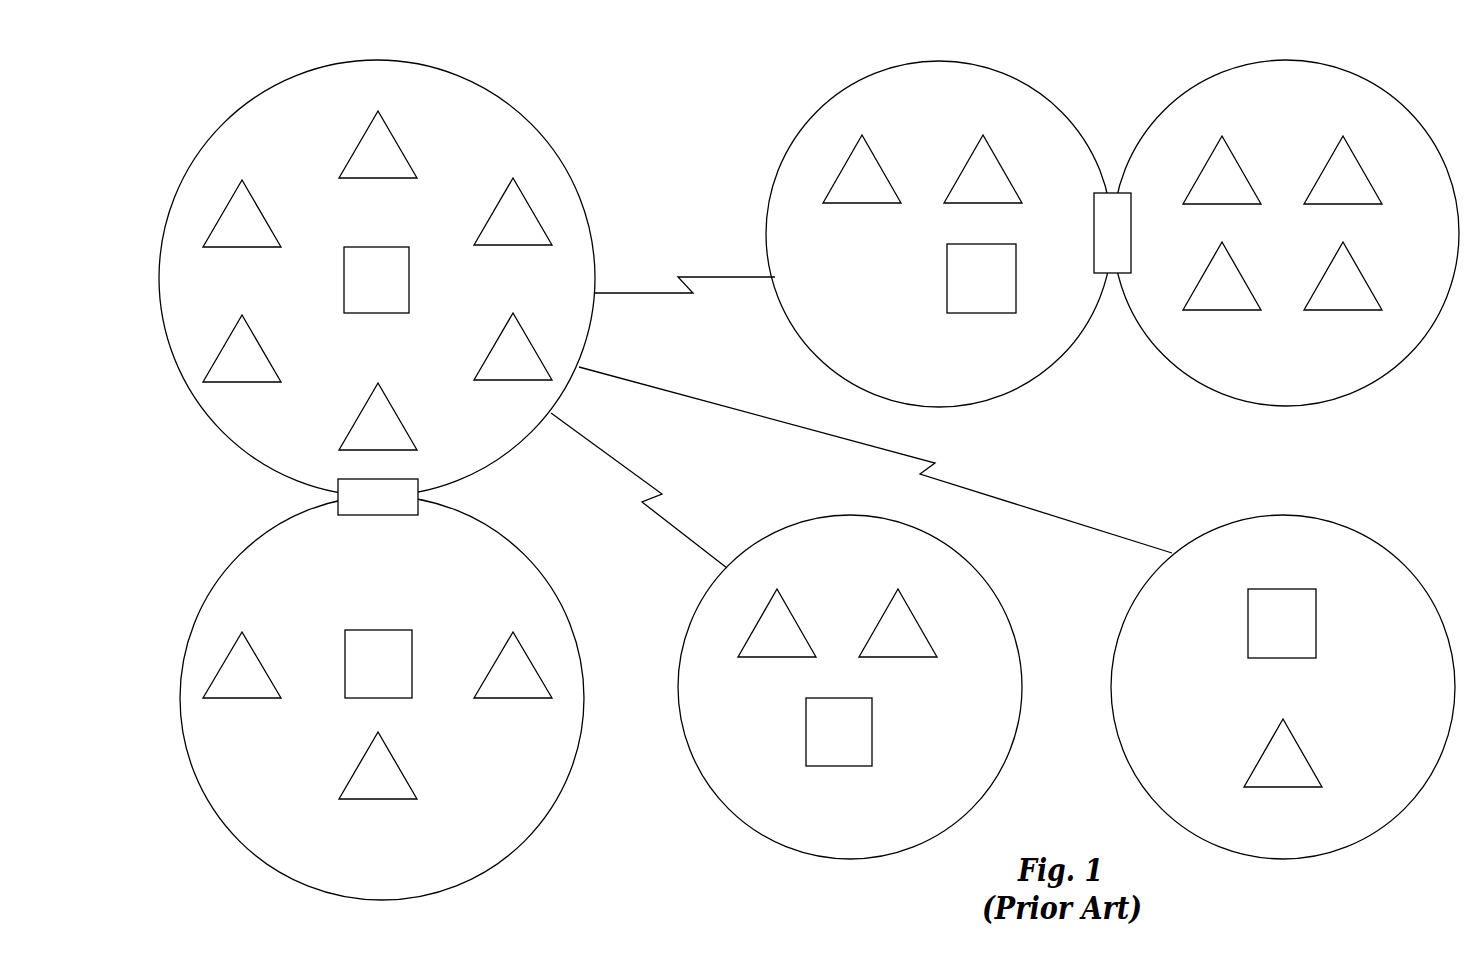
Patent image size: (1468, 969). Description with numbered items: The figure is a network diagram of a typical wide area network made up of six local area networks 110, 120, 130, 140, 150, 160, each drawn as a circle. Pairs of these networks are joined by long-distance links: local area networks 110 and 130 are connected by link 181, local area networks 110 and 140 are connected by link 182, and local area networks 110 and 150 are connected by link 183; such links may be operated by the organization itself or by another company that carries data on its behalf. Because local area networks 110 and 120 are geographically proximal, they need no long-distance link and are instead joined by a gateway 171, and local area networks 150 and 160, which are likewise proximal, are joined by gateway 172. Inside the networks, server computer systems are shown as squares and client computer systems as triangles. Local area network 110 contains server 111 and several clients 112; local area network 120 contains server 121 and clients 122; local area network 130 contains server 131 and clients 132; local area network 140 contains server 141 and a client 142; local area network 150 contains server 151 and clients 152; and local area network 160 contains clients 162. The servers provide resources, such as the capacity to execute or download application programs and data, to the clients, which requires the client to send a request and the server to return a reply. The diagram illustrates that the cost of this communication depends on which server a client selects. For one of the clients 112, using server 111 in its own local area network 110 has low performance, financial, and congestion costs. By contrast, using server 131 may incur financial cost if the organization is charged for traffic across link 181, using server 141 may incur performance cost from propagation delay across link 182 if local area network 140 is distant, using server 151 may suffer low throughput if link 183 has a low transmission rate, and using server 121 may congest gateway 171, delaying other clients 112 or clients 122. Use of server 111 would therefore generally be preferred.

The local area network 110 is at (408, 278).
The server 111 is at (402, 266).
The clients 112 is at (377, 275).
The local area network 120 is at (406, 698).
The server 121 is at (402, 650).
The clients 122 is at (384, 710).
The local area network 130 is at (891, 687).
The server 131 is at (859, 745).
The clients 132 is at (853, 631).
The local area network 140 is at (1283, 709).
The server 141 is at (1319, 622).
The client 142 is at (1306, 747).
The local area network 150 is at (961, 237).
The server 151 is at (1000, 292).
The clients 152 is at (938, 177).
The local area network 160 is at (1286, 254).
The clients 162 is at (1300, 230).
The gateway 171 is at (291, 489).
The gateway 172 is at (1153, 165).
The link 181 is at (665, 490).
The link 182 is at (875, 460).
The link 183 is at (685, 267).